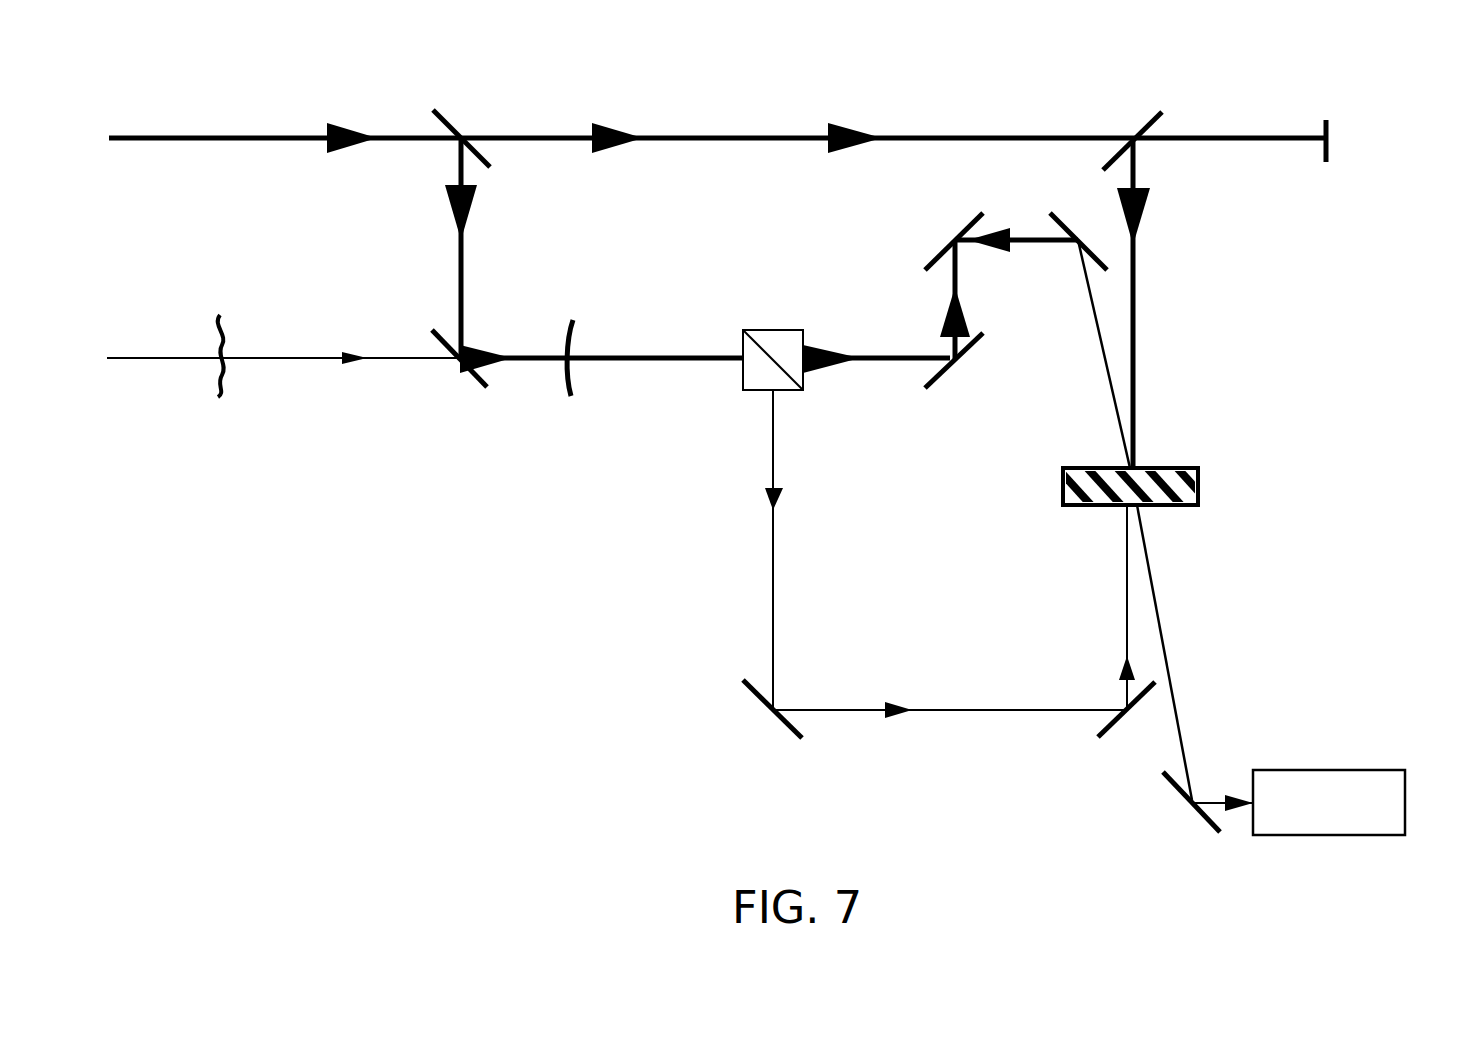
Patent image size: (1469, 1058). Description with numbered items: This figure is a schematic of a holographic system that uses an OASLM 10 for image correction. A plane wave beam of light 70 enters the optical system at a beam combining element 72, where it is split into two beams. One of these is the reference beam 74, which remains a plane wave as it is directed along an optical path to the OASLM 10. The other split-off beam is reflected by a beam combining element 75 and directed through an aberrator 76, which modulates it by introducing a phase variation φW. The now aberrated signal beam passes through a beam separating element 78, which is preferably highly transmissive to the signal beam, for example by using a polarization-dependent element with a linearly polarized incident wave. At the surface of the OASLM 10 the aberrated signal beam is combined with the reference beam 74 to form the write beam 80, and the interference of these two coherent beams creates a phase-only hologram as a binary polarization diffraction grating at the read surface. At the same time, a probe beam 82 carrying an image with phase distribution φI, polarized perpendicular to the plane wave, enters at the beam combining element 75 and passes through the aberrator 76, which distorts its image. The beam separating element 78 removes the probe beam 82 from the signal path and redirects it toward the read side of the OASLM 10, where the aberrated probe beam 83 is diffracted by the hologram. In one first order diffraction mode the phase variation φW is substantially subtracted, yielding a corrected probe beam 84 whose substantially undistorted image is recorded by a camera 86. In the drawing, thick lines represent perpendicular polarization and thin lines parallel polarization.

The plane wave beam of light 70 is at (285, 114).
The beam combining element 72 is at (497, 170).
The reference beam 74 is at (893, 119).
The beam combining element 75 is at (424, 324).
The aberrator 76 is at (611, 410).
The beam separating element 78 is at (802, 340).
The write beam 80 is at (1253, 290).
The probe beam 82 is at (284, 406).
The aberrated probe beam 83 is at (949, 564).
The corrected probe beam 84 is at (1287, 668).
The camera 86 is at (1329, 801).
The OASLM 10 is at (1223, 487).